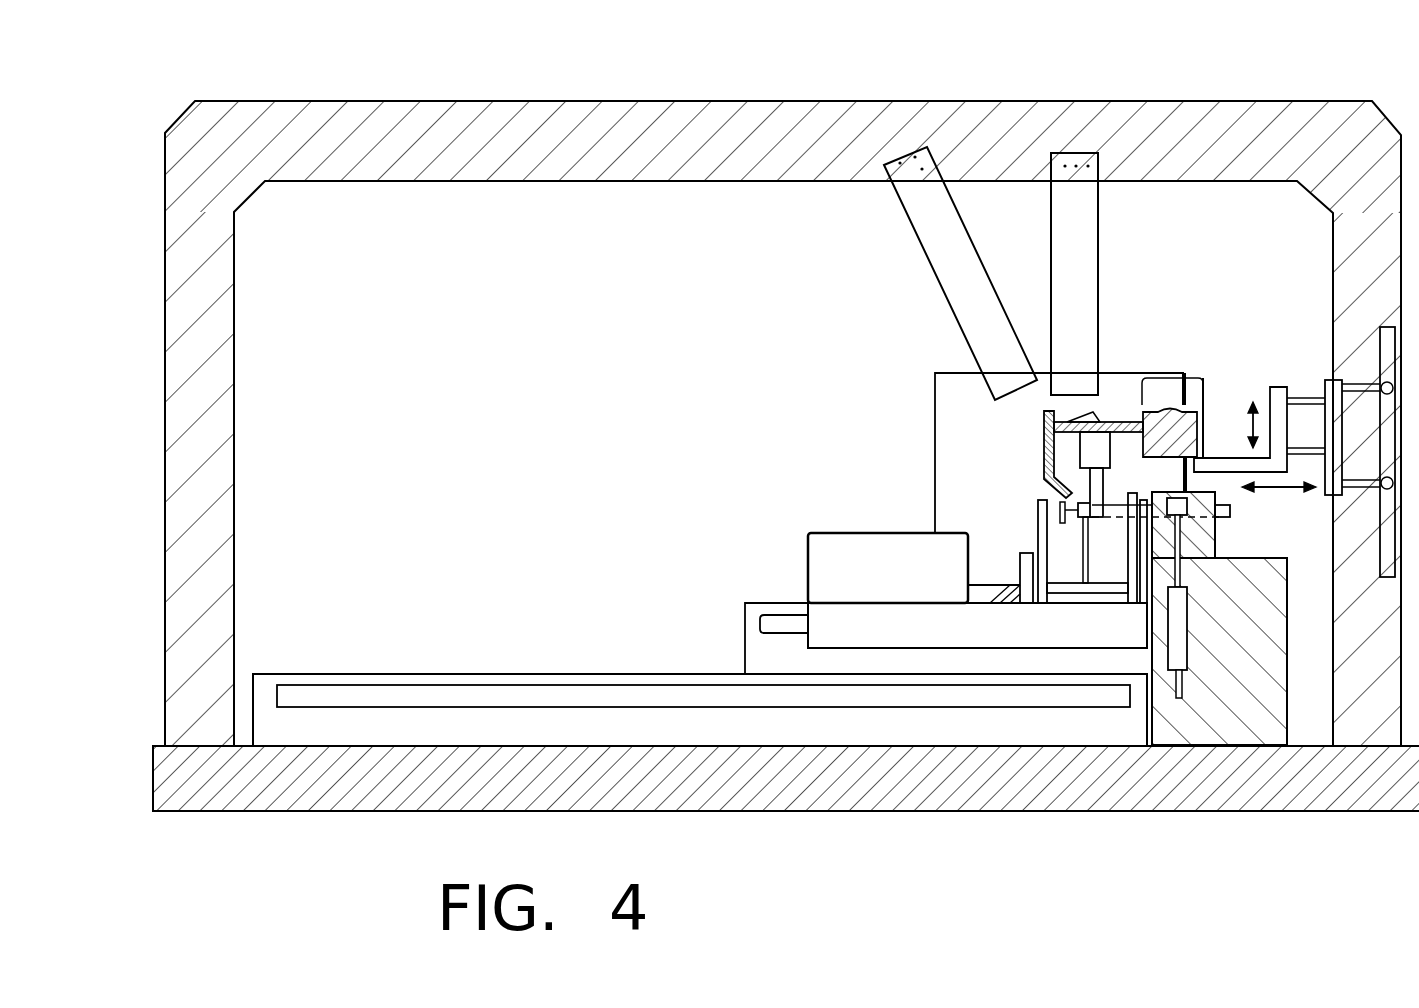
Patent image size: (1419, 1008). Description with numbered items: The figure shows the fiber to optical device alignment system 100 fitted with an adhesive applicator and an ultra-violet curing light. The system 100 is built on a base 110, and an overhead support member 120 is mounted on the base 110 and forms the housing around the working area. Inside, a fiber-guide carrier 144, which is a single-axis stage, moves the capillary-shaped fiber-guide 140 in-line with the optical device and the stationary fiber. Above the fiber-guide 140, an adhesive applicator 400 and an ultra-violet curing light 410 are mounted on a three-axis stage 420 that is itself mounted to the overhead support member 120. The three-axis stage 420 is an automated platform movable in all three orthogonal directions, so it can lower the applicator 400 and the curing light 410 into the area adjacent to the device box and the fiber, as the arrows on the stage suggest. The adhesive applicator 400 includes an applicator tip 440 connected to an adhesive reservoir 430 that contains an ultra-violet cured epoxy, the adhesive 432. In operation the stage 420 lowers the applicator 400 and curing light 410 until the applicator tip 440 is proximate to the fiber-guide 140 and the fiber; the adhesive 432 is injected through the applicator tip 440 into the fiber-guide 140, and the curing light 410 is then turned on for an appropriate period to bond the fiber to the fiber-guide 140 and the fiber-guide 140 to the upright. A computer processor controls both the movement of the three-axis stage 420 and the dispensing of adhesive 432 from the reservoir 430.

The fiber to optical device alignment system 100 is at (326, 70).
The base 110 is at (1013, 811).
The overhead support member 120 is at (236, 326).
The fiber-guide 140 is at (1085, 503).
The fiber-guide carrier 144 is at (808, 572).
The adhesive applicator 400 is at (1142, 408).
The ultra-violet curing light 410 is at (1043, 437).
The three-axis stage 420 is at (1325, 382).
The adhesive reservoir 430 is at (1173, 377).
The adhesive 432 is at (1107, 507).
The applicator tip 440 is at (1217, 517).